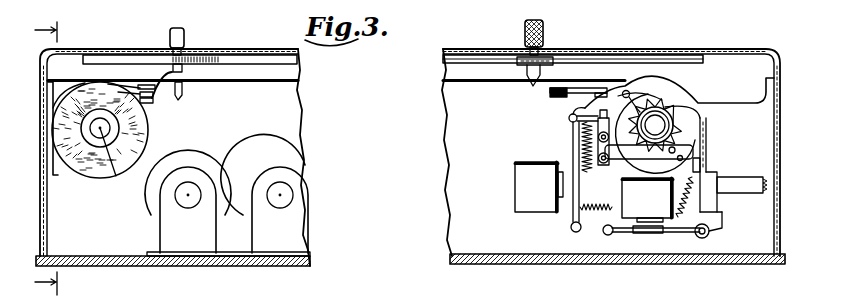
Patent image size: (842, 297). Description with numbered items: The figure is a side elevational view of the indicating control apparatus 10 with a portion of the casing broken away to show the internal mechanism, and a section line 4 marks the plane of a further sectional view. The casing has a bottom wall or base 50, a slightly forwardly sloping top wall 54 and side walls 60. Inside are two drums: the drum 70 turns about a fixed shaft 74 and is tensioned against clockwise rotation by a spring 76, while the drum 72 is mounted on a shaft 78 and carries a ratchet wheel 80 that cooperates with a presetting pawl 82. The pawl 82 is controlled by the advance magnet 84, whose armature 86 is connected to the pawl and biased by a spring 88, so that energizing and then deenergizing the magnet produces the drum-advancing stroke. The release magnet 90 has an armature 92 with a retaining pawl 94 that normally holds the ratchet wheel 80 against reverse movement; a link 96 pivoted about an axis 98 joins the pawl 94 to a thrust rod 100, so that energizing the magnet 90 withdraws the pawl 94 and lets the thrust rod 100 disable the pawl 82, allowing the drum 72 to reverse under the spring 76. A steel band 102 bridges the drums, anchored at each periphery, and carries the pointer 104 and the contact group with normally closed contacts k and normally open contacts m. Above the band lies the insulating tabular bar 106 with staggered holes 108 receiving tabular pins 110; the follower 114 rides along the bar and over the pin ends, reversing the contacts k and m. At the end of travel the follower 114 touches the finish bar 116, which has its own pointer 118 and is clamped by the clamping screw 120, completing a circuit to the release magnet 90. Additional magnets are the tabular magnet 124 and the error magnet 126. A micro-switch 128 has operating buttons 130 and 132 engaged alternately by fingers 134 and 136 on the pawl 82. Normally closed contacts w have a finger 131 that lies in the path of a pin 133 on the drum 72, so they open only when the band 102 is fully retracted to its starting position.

The section line 4 is at (52, 158).
The indicating control apparatus 10 is at (485, 283).
The bottom wall or base 50 is at (268, 266).
The top wall 54 is at (745, 48).
The side walls 60 is at (459, 234).
The drum 70 is at (149, 121).
The drum 72 is at (696, 93).
The fixed shaft 74 is at (116, 176).
The spring 76 is at (143, 147).
The shaft 78 is at (655, 133).
The ratchet wheel 80 is at (697, 112).
The pawl 82 is at (707, 142).
The advance magnet 84 is at (647, 200).
The armature 86 is at (682, 238).
The spring 88 is at (683, 196).
The release magnet 90 is at (539, 187).
The armature 92 is at (573, 142).
The retaining pawl 94 is at (569, 120).
The link 96 is at (609, 128).
The axis 98 is at (611, 144).
The thrust rod 100 is at (608, 165).
The steel band 102 is at (273, 84).
The indicator or pointer 104 is at (178, 96).
The tabular bar 106 is at (280, 59).
The holes 108 is at (206, 67).
The tabular pins 110 is at (187, 33).
The follower 114 is at (170, 75).
The finish bar 116 is at (517, 63).
The indicator or pointer 118 is at (534, 83).
The clamping screw 120 is at (545, 30).
The tabular magnet 124 is at (189, 158).
The error magnet 126 is at (265, 158).
The micro-switch 128 is at (737, 180).
The operating button 130 is at (725, 175).
The finger or projection 131 is at (653, 94).
The operating button 132 is at (722, 197).
The pin 133 is at (629, 92).
The operating finger 134 is at (715, 158).
The operating finger 136 is at (721, 216).
The normally closed contacts k is at (133, 84).
The normally open contacts m is at (147, 103).
The normally closed contacts w is at (587, 89).